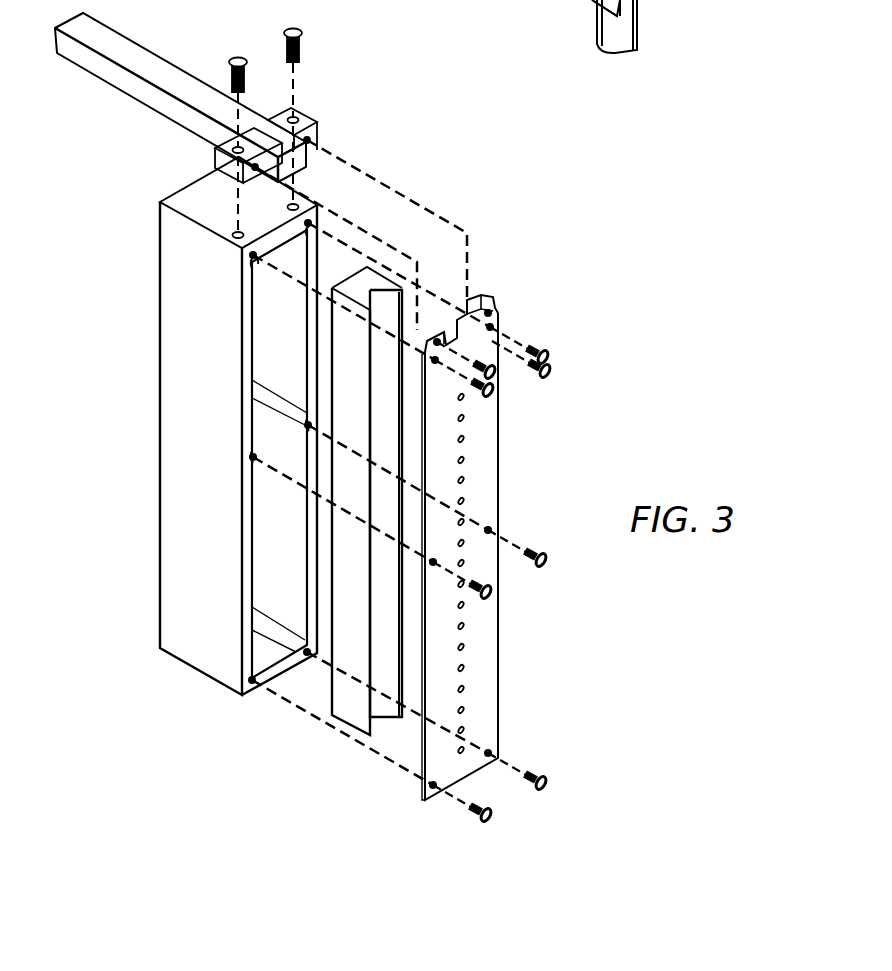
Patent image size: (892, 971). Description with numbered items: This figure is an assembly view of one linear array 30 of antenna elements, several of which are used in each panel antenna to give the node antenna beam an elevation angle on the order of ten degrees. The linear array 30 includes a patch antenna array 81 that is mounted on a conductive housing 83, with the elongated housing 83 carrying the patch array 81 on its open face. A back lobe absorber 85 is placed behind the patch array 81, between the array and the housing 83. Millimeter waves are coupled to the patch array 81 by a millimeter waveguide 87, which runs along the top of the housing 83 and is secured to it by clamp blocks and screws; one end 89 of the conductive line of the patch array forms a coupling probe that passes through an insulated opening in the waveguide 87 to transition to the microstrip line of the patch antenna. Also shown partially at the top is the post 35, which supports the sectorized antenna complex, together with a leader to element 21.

The linear array 30 is at (636, 227).
The guide rail 21 is at (592, 0).
The post 35 is at (630, 20).
The patch antenna array 81 is at (498, 456).
The conductive housing 83 is at (171, 408).
The back lobe absorber 85 is at (375, 277).
The millimeter waveguide 87 is at (160, 69).
The end of the line 89 is at (462, 312).